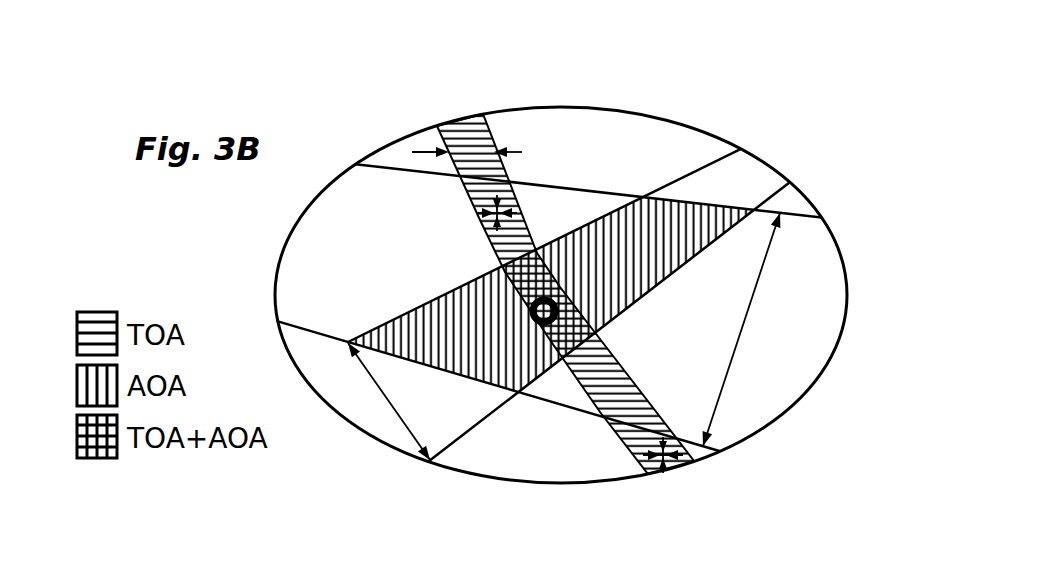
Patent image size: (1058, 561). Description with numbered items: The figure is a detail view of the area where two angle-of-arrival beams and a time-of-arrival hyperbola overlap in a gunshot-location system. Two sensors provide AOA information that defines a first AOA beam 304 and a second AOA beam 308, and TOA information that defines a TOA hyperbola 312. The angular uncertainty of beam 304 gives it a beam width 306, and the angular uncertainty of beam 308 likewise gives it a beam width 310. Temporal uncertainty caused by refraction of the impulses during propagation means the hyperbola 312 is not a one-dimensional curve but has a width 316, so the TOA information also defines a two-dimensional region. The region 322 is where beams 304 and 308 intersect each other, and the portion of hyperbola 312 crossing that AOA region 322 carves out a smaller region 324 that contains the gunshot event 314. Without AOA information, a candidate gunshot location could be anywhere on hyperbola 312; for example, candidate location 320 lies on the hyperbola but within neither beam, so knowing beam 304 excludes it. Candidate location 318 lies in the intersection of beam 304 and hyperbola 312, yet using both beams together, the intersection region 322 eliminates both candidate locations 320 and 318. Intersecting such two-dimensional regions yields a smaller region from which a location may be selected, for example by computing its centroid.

The AOA beam 304 is at (402, 136).
The beam width 306 is at (745, 328).
The AOA beam 308 is at (687, 173).
The beam width 310 is at (398, 425).
The TOA hyperbola 312 is at (462, 120).
The gunshot event 314 is at (570, 298).
The width of TOA hyperbola 316 is at (491, 155).
The candidate location 318 is at (466, 210).
The candidate location 320 is at (630, 447).
The AOA region 322 is at (551, 294).
The smaller region 324 is at (500, 293).